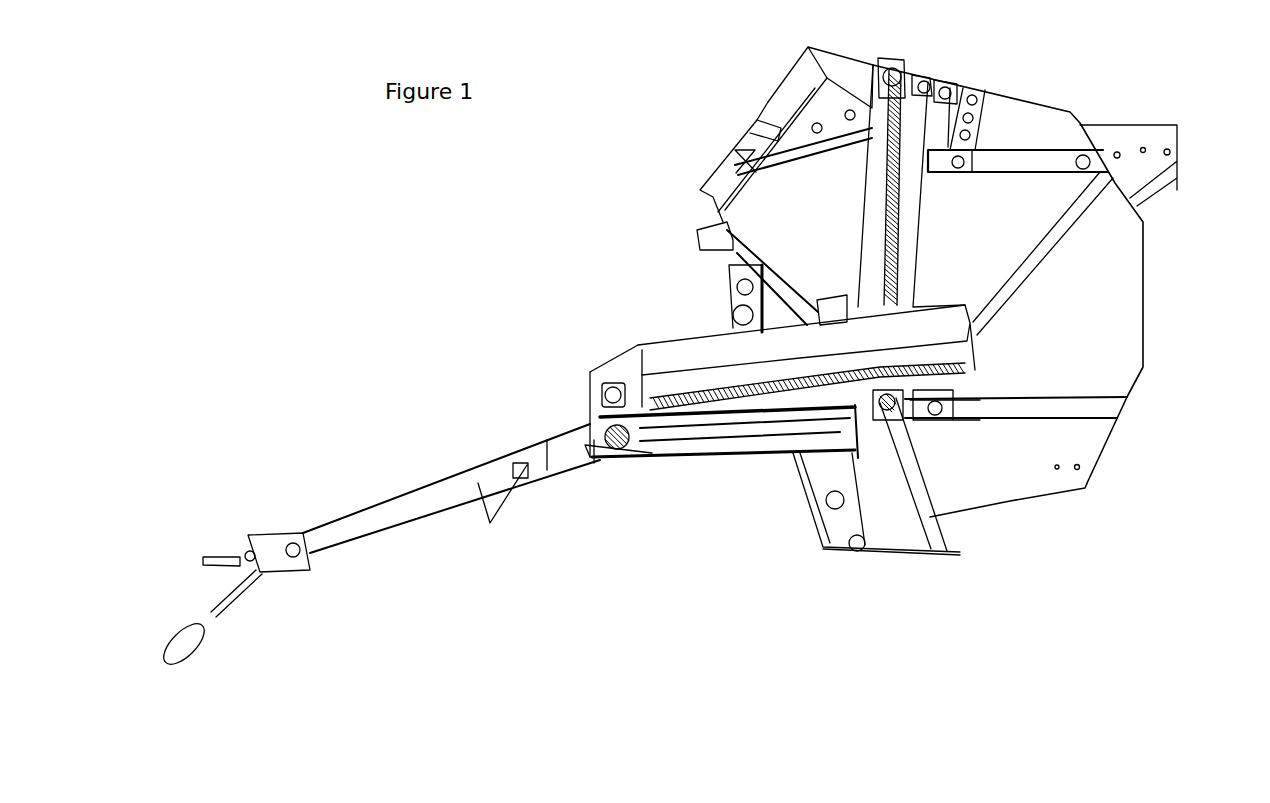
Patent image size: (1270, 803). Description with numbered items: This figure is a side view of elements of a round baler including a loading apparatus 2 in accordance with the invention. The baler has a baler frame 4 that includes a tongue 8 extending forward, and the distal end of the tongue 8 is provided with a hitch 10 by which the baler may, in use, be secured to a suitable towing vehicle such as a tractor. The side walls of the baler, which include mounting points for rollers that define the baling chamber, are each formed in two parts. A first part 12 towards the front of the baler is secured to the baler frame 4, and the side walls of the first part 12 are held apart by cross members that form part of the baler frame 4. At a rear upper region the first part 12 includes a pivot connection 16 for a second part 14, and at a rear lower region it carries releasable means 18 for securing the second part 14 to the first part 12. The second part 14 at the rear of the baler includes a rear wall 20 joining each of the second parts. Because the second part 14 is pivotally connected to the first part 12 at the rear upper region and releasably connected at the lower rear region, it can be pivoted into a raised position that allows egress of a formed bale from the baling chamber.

The loading apparatus 2 is at (698, 485).
The baler frame 4 is at (913, 562).
The tongue 8 is at (450, 460).
The hitch 10 is at (267, 532).
The first part 12 is at (785, 189).
The second part 14 is at (1045, 208).
The pivot connection 16 is at (890, 76).
The releasable means 18 is at (928, 428).
The rear wall 20 is at (1152, 268).